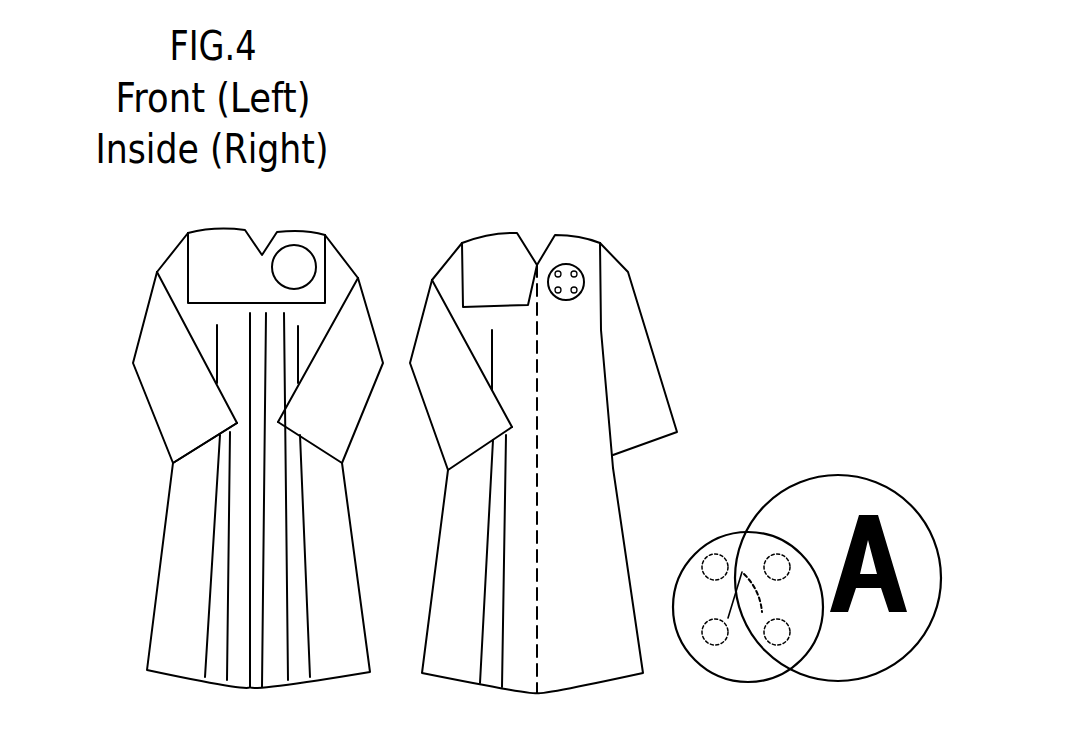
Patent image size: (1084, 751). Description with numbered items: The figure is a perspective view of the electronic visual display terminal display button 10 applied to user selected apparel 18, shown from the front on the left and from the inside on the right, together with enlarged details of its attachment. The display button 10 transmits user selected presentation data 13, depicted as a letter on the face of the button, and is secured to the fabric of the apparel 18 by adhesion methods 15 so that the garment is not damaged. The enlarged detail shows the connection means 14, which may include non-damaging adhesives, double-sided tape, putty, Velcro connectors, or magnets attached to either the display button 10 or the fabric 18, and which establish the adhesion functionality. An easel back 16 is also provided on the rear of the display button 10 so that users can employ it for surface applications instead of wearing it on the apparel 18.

The display button 10 is at (314, 232).
The user selected presentation data 13 is at (265, 266).
The connection means 14 is at (715, 542).
The adhesion methods 15 is at (565, 250).
The easel back 16 is at (750, 624).
The user selected apparel 18 is at (128, 618).